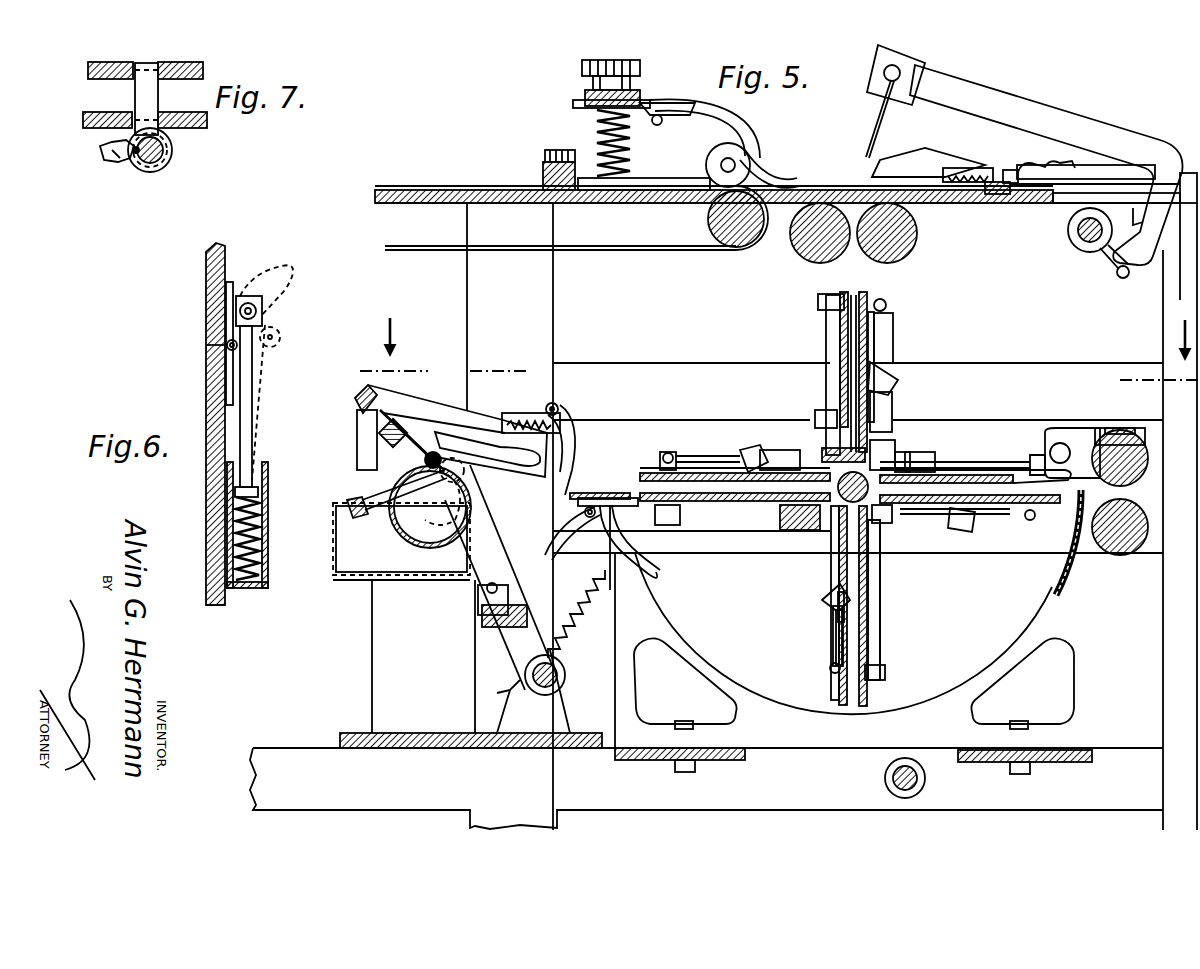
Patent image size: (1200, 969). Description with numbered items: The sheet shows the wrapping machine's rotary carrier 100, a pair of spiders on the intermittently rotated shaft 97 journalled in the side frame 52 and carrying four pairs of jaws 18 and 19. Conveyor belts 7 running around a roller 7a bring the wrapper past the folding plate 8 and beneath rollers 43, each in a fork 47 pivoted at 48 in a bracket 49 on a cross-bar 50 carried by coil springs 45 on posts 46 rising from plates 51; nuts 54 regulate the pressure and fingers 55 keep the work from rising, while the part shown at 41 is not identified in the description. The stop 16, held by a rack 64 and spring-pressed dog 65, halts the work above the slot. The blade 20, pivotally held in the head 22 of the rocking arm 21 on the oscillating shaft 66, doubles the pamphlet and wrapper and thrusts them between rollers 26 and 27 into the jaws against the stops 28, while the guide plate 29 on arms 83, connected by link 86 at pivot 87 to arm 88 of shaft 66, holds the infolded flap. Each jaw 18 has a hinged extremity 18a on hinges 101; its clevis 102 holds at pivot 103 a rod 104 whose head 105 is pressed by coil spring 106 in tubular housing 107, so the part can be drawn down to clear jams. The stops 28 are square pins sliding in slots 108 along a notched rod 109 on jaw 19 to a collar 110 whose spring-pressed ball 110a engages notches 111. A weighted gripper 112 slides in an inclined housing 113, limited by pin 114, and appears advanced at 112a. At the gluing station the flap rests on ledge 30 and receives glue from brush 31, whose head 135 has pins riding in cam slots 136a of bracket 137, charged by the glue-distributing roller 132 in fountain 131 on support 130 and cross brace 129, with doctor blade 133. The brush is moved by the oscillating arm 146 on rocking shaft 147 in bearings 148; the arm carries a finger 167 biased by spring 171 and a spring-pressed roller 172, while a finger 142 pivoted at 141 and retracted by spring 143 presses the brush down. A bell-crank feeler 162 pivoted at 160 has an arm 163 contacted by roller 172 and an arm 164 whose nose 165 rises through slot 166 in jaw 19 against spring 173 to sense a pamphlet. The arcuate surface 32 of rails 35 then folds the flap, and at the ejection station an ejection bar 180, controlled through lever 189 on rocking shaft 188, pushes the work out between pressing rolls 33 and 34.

In FIG. 5, the conveyor belts 7 is at (634, 241).
In FIG. 5, the roller 7a is at (730, 246).
In FIG. 5, the folding plate 8 is at (543, 172).
In FIG. 5, the stop 16 is at (1003, 203).
In FIG. 7, the jaw 18 is at (88, 130).
In FIG. 6, the jaw 18 is at (206, 508).
In FIG. 5, the jaw 18 is at (715, 505).
In FIG. 6, the pivoted end part of jaw 18a is at (206, 272).
In FIG. 5, the pivoted end part of jaw 18a is at (868, 300).
In FIG. 7, the jaw 19 is at (88, 69).
In FIG. 5, the jaw 19 is at (826, 330).
In FIG. 5, the blade 20 is at (873, 120).
In FIG. 5, the rocking arm 21 is at (1005, 108).
In FIG. 5, the head 22 is at (920, 62).
In FIG. 5, the roller 26 is at (902, 260).
In FIG. 5, the roller 27 is at (800, 262).
In FIG. 7, the adjustable stop 28 is at (135, 97).
In FIG. 5, the adjustable stop 28 is at (925, 472).
In FIG. 5, the guide plate 29 is at (898, 152).
In FIG. 5, the ledge 30 is at (578, 492).
In FIG. 5, the glue-bearing brush 31 is at (440, 455).
In FIG. 5, the arcuate surface 32 is at (1060, 567).
In FIG. 5, the pressing roll 33 is at (1100, 445).
In FIG. 5, the pressing roll 34 is at (1145, 515).
In FIG. 5, the guide rails 35 is at (1040, 612).
In FIG. 5, the bolt 41 is at (548, 152).
In FIG. 5, the rollers 43 is at (750, 160).
In FIG. 5, the coil springs 45 is at (618, 60).
In FIG. 5, the posts 46 is at (597, 130).
In FIG. 5, the fork 47 is at (725, 112).
In FIG. 5, the pivot 48 is at (660, 125).
In FIG. 5, the bracket 49 is at (650, 103).
In FIG. 5, the cross-bar 50 is at (585, 96).
In FIG. 5, the plates 51 is at (652, 178).
In FIG. 5, the side frame 52 is at (307, 760).
In FIG. 5, the nuts 54 is at (593, 66).
In FIG. 5, the fingers 55 is at (783, 169).
In FIG. 5, the rack 64 is at (972, 203).
In FIG. 5, the spring-pressed dog 65 is at (1022, 160).
In FIG. 5, the oscillating shaft 66 is at (1082, 253).
In FIG. 5, the arms 83 is at (952, 168).
In FIG. 5, the link 86 is at (1132, 208).
In FIG. 5, the pivot 87 is at (1124, 279).
In FIG. 5, the arm 88 is at (1102, 262).
In FIG. 5, the shaft 97 is at (840, 500).
In FIG. 5, the carrier 100 is at (895, 455).
In FIG. 6, the hinges 101 is at (232, 284).
In FIG. 5, the hinges 101 is at (876, 325).
In FIG. 6, the clevis 102 is at (258, 306).
In FIG. 5, the clevis 102 is at (886, 305).
In FIG. 6, the pivot 103 is at (262, 316).
In FIG. 6, the rod 104 is at (252, 378).
In FIG. 5, the rod 104 is at (893, 350).
In FIG. 6, the head 105 is at (258, 492).
In FIG. 6, the coil spring 106 is at (262, 520).
In FIG. 6, the tubular housing 107 is at (268, 542).
In FIG. 5, the tubular housing 107 is at (892, 400).
In FIG. 7, the slots 108 is at (150, 55).
In FIG. 7, the notched rod 109 is at (164, 150).
In FIG. 5, the notched rod 109 is at (839, 378).
In FIG. 7, the collar 110 is at (122, 156).
In FIG. 5, the collar 110 is at (815, 420).
In FIG. 7, the spring-pressed ball 110a is at (131, 165).
In FIG. 7, the notches 111 is at (147, 168).
In FIG. 5, the gravity gripper 112 is at (770, 505).
In FIG. 5, the gripper in gripping position 112a is at (833, 640).
In FIG. 5, the inclined housing 113 is at (898, 384).
In FIG. 5, the pin 114 is at (900, 390).
In FIG. 5, the cross brace 129 is at (425, 733).
In FIG. 5, the support 130 is at (423, 656).
In FIG. 5, the glue fountain 131 is at (350, 578).
In FIG. 5, the glue-distributing roller 132 is at (405, 528).
In FIG. 5, the doctor blade 133 is at (360, 496).
In FIG. 5, the brush head 135 is at (355, 396).
In FIG. 5, the cam slot 136a is at (478, 412).
In FIG. 5, the bracket 137 is at (425, 428).
In FIG. 5, the pivot 141 is at (560, 404).
In FIG. 5, the finger 142 is at (575, 412).
In FIG. 5, the spring 143 is at (528, 413).
In FIG. 5, the oscillating arm 146 is at (510, 660).
In FIG. 5, the rocking shaft 147 is at (566, 676).
In FIG. 5, the bearings 148 is at (533, 691).
In FIG. 5, the pivot 160 is at (588, 518).
In FIG. 5, the feeler 162 is at (553, 513).
In FIG. 5, the feeler arm 163 is at (548, 530).
In FIG. 5, the feeler arm 164 is at (620, 548).
In FIG. 5, the nose 165 is at (640, 568).
In FIG. 5, the slot 166 is at (818, 302).
In FIG. 5, the finger 167 is at (478, 600).
In FIG. 5, the spring 171 is at (490, 625).
In FIG. 5, the spring-pressed roller 172 is at (555, 555).
In FIG. 5, the spring 173 is at (568, 630).
In FIG. 5, the ejection bar 180 is at (912, 450).
In FIG. 5, the rocking shaft 188 is at (885, 780).
In FIG. 5, the lever 189 is at (925, 622).